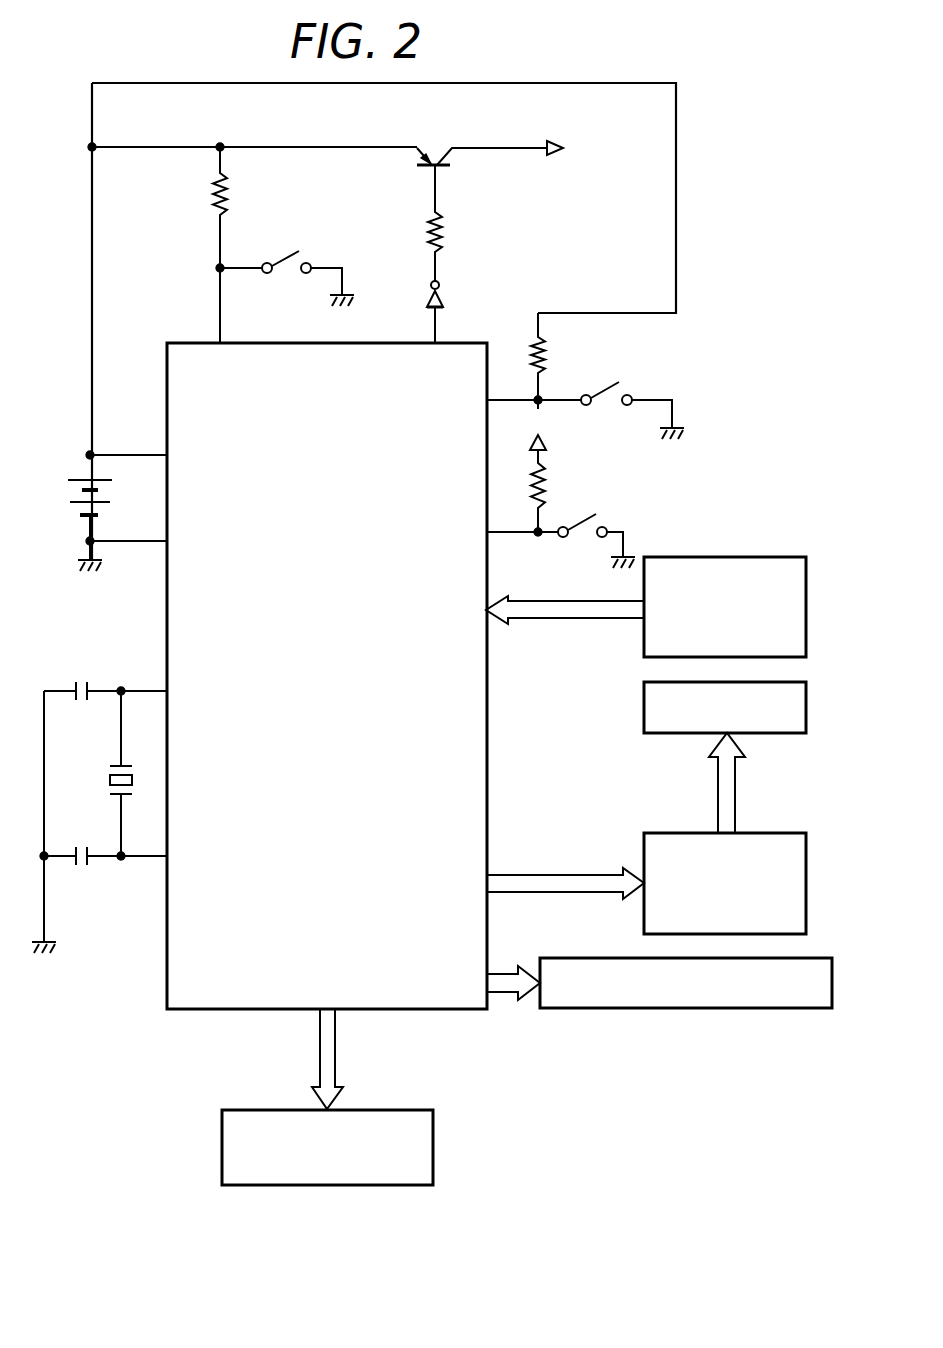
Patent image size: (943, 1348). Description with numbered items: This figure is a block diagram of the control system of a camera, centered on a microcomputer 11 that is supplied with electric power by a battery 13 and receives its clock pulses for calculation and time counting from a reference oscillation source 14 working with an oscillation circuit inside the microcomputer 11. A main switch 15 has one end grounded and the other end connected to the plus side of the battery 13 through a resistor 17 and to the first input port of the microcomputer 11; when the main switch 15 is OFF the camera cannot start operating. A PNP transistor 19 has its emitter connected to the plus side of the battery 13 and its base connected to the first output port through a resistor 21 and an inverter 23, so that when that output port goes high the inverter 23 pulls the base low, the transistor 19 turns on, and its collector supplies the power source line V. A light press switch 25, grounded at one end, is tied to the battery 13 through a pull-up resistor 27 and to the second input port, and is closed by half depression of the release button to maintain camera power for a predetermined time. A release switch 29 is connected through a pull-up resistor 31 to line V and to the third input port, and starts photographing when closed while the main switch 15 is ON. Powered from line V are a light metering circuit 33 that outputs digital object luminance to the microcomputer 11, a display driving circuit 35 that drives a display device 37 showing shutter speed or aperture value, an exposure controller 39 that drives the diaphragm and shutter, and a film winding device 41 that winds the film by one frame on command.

The microcomputer 11 is at (167, 940).
The battery 13 is at (68, 498).
The reference oscillation source 14 is at (68, 682).
The main switch 15 is at (297, 255).
The resistor 17 is at (220, 196).
The PNP transistor 19 is at (438, 158).
The resistor 21 is at (446, 232).
The inverter 23 is at (442, 297).
The light press switch 25 is at (617, 386).
The pull-up resistor 27 is at (552, 362).
The release switch 29 is at (586, 521).
The pull-up resistor 31 is at (548, 492).
The light metering circuit 33 is at (806, 595).
The display driving circuit 35 is at (806, 862).
The display device 37 is at (806, 710).
The exposure controller 39 is at (832, 982).
The film winding device 41 is at (433, 1146).